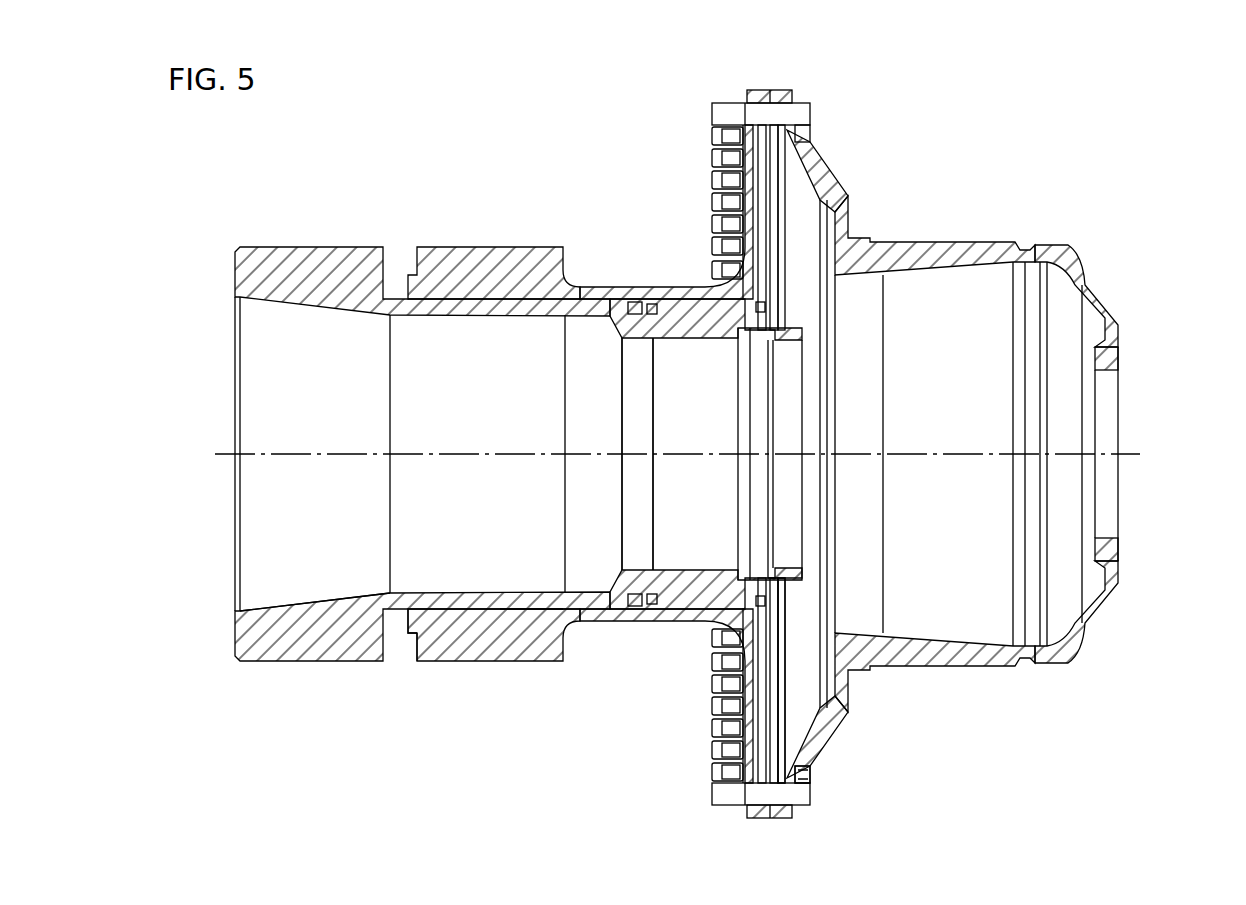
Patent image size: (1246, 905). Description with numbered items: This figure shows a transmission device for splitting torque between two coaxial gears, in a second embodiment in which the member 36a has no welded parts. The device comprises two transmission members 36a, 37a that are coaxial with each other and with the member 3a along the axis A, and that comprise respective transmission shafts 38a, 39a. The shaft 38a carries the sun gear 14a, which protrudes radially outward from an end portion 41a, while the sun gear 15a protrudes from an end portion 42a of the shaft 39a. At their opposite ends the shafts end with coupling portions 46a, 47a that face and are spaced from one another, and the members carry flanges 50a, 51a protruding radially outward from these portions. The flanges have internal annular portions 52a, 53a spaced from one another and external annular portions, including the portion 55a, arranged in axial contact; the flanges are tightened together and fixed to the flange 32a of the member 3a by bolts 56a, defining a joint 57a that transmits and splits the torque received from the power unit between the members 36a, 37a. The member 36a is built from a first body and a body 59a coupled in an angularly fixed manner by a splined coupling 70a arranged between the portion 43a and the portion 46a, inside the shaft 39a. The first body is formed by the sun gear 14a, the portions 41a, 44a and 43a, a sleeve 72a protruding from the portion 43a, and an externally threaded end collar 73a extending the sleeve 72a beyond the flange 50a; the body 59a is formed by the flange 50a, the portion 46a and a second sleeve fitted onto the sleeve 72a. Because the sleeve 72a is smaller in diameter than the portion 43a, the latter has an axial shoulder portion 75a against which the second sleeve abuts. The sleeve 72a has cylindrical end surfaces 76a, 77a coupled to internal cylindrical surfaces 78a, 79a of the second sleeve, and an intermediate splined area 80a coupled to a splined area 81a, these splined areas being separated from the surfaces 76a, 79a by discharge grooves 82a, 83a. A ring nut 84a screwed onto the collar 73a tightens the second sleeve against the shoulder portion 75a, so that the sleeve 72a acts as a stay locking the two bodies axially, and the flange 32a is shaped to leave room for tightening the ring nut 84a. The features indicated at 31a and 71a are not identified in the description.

The member 3a is at (1053, 666).
The sun gear 14a is at (275, 663).
The sun gear 15a is at (465, 663).
The housing 31a is at (933, 422).
The flange 32a is at (838, 208).
The transmission member 36a is at (300, 247).
The transmission member 37a is at (460, 247).
The transmission shaft 38a is at (422, 451).
The transmission shaft 39a is at (594, 621).
The end portion 41a is at (393, 611).
The end portion 42a is at (455, 607).
The portion 43a is at (518, 592).
The portion 44a is at (408, 598).
The coupling portion 46a is at (800, 597).
The coupling portion 47a is at (738, 618).
The flange 50a is at (813, 750).
The flange 51a is at (739, 490).
The internal annular portion 52a is at (847, 700).
The internal annular portion 53a is at (739, 672).
The external annular portion 55a is at (712, 781).
The bolts 56a is at (813, 778).
The joint 57a is at (790, 823).
The body 59a is at (782, 621).
The splined coupling 70a is at (690, 587).
The seal ring 71a is at (655, 600).
The sleeve 72a is at (659, 577).
The end collar 73a is at (782, 565).
The axial shoulder portion 75a is at (630, 608).
The cylindrical end surface 76a is at (627, 301).
The cylindrical end surface 77a is at (818, 200).
The internal cylindrical surface 78a is at (620, 338).
The internal cylindrical surface 79a is at (762, 331).
The splined area 80a is at (677, 332).
The splined area 81a is at (760, 304).
The discharge groove 82a is at (648, 303).
The discharge groove 83a is at (676, 454).
The ring nut 84a is at (975, 727).
The axis A is at (1135, 446).